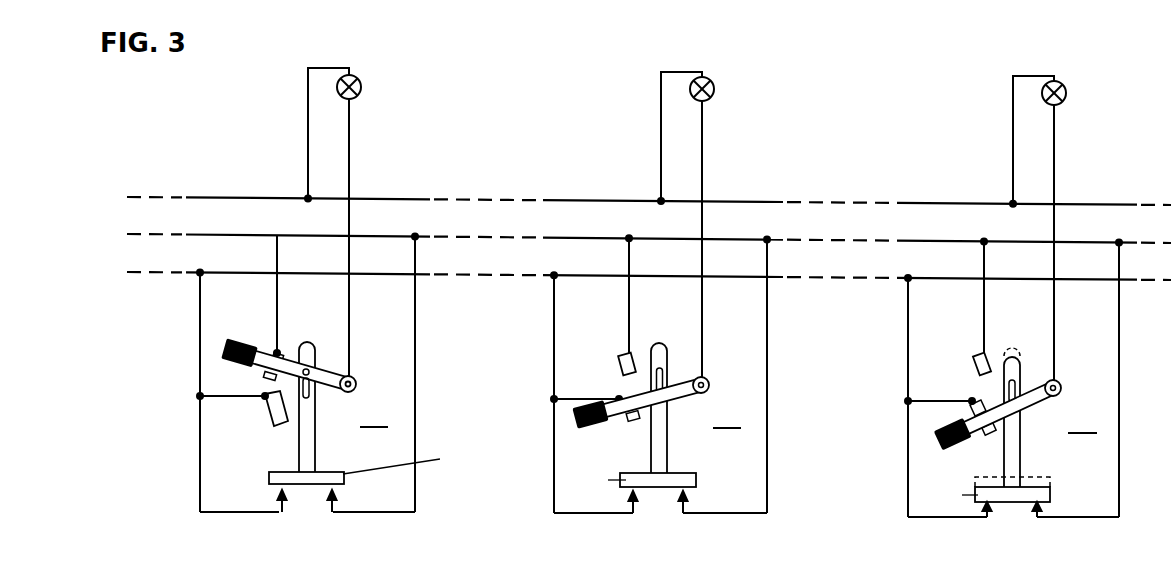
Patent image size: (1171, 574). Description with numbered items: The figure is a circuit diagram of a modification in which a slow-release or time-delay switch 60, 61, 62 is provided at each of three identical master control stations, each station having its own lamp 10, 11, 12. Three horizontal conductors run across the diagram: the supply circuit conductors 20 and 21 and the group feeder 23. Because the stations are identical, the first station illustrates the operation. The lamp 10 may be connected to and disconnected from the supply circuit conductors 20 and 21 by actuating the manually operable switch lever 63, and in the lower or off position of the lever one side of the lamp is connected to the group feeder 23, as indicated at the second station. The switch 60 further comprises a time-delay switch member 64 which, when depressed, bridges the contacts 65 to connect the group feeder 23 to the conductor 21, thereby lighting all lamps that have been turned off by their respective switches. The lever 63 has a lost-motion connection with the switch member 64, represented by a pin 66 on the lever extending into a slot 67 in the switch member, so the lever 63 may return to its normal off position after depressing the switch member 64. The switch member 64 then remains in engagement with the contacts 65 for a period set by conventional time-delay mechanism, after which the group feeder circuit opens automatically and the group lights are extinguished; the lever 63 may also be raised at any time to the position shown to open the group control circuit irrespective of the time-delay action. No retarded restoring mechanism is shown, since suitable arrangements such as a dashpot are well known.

The lamp 10 is at (356, 80).
The lamp 11 is at (710, 80).
The lamp 12 is at (1064, 86).
The supply circuit conductor 20 is at (563, 199).
The supply circuit conductor 21 is at (565, 236).
The group feeder 23 is at (567, 273).
The slow-release or time-delay switch 60 is at (345, 373).
The slow-release or time-delay switch 61 is at (660, 374).
The slow-release or time-delay switch 62 is at (1013, 377).
The manually operable switch lever 63 is at (262, 361).
The time-delay switch member 64 is at (306, 468).
The contacts 65 is at (327, 497).
The pin 66 is at (311, 370).
The slot 67 is at (311, 393).